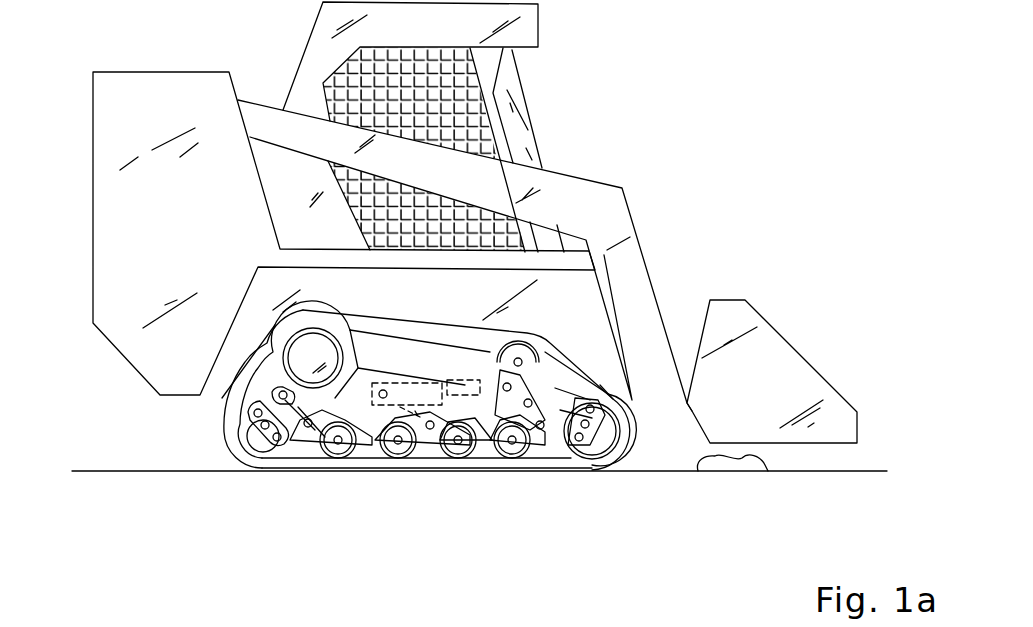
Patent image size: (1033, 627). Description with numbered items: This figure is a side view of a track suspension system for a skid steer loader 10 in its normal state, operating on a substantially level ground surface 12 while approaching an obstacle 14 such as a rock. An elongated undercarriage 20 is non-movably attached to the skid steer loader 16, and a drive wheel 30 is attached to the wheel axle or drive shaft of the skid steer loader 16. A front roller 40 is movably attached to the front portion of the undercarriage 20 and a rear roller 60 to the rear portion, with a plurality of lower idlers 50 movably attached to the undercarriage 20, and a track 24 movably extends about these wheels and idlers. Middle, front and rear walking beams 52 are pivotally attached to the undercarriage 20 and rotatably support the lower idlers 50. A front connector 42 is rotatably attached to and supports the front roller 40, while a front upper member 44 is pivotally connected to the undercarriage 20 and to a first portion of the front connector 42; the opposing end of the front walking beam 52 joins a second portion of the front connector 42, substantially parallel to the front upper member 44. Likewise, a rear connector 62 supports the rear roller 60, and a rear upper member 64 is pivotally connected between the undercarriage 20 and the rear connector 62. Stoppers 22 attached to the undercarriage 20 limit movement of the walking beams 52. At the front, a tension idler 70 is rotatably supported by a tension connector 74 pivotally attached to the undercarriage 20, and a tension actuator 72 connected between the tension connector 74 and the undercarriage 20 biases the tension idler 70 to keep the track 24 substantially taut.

The track suspension system for a skid steer loader 10 is at (700, 187).
The ground surface 12 is at (102, 471).
The obstacle 14 is at (750, 457).
The skid steer loader 16 is at (284, 72).
The undercarriage 20 is at (488, 448).
The stopper 22 is at (385, 392).
The track 24 is at (472, 330).
The drive wheel 30 is at (277, 343).
The front roller 40 is at (603, 445).
The front connector 42 is at (653, 440).
The front upper member 44 is at (597, 390).
The lower idlers 50 is at (404, 448).
The walking beam 52 is at (304, 448).
The rear roller 60 is at (264, 450).
The rear connector 62 is at (232, 448).
The rear upper member 64 is at (242, 397).
The tension idler 70 is at (558, 335).
The tension actuator 72 is at (413, 388).
The tension connector 74 is at (545, 375).